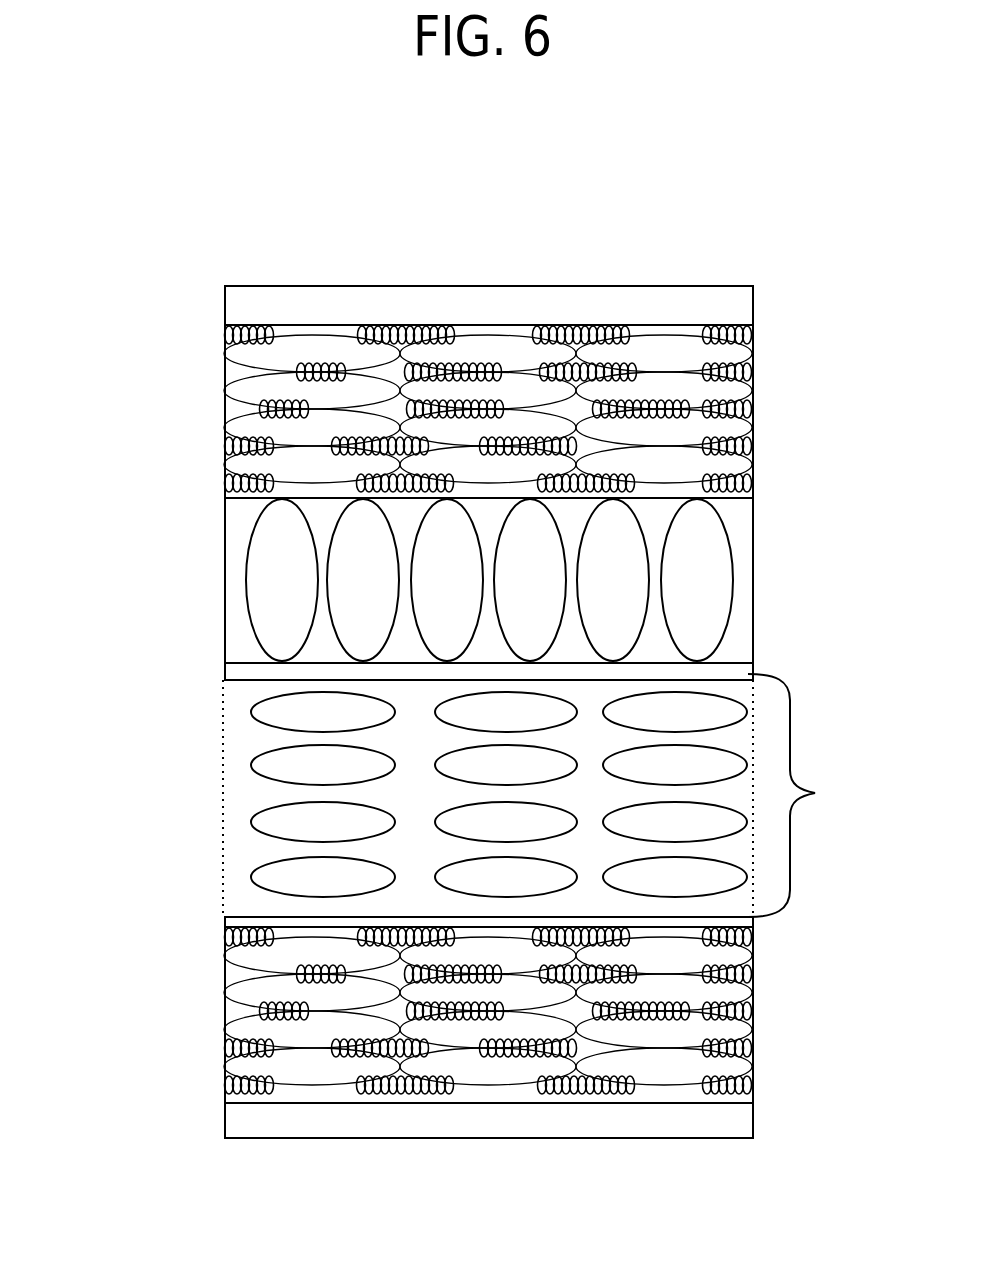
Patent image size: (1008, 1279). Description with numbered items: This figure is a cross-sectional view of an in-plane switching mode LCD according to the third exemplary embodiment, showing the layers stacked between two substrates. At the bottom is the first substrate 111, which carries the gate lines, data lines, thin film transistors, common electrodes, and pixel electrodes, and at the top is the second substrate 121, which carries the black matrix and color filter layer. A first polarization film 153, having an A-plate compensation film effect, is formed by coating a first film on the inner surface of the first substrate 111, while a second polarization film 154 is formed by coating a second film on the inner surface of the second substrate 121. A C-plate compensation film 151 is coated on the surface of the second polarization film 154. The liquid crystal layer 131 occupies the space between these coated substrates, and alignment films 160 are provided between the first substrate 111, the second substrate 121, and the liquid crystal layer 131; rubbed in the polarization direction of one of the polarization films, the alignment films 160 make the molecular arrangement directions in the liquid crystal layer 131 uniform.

The first substrate 111 is at (237, 1122).
The second substrate 121 is at (237, 306).
The liquid crystal layer 131 is at (237, 846).
The C-plate compensation film 151 is at (237, 574).
The first polarization film 153 is at (237, 996).
The second polarization film 154 is at (237, 411).
The alignment films 160 is at (820, 795).